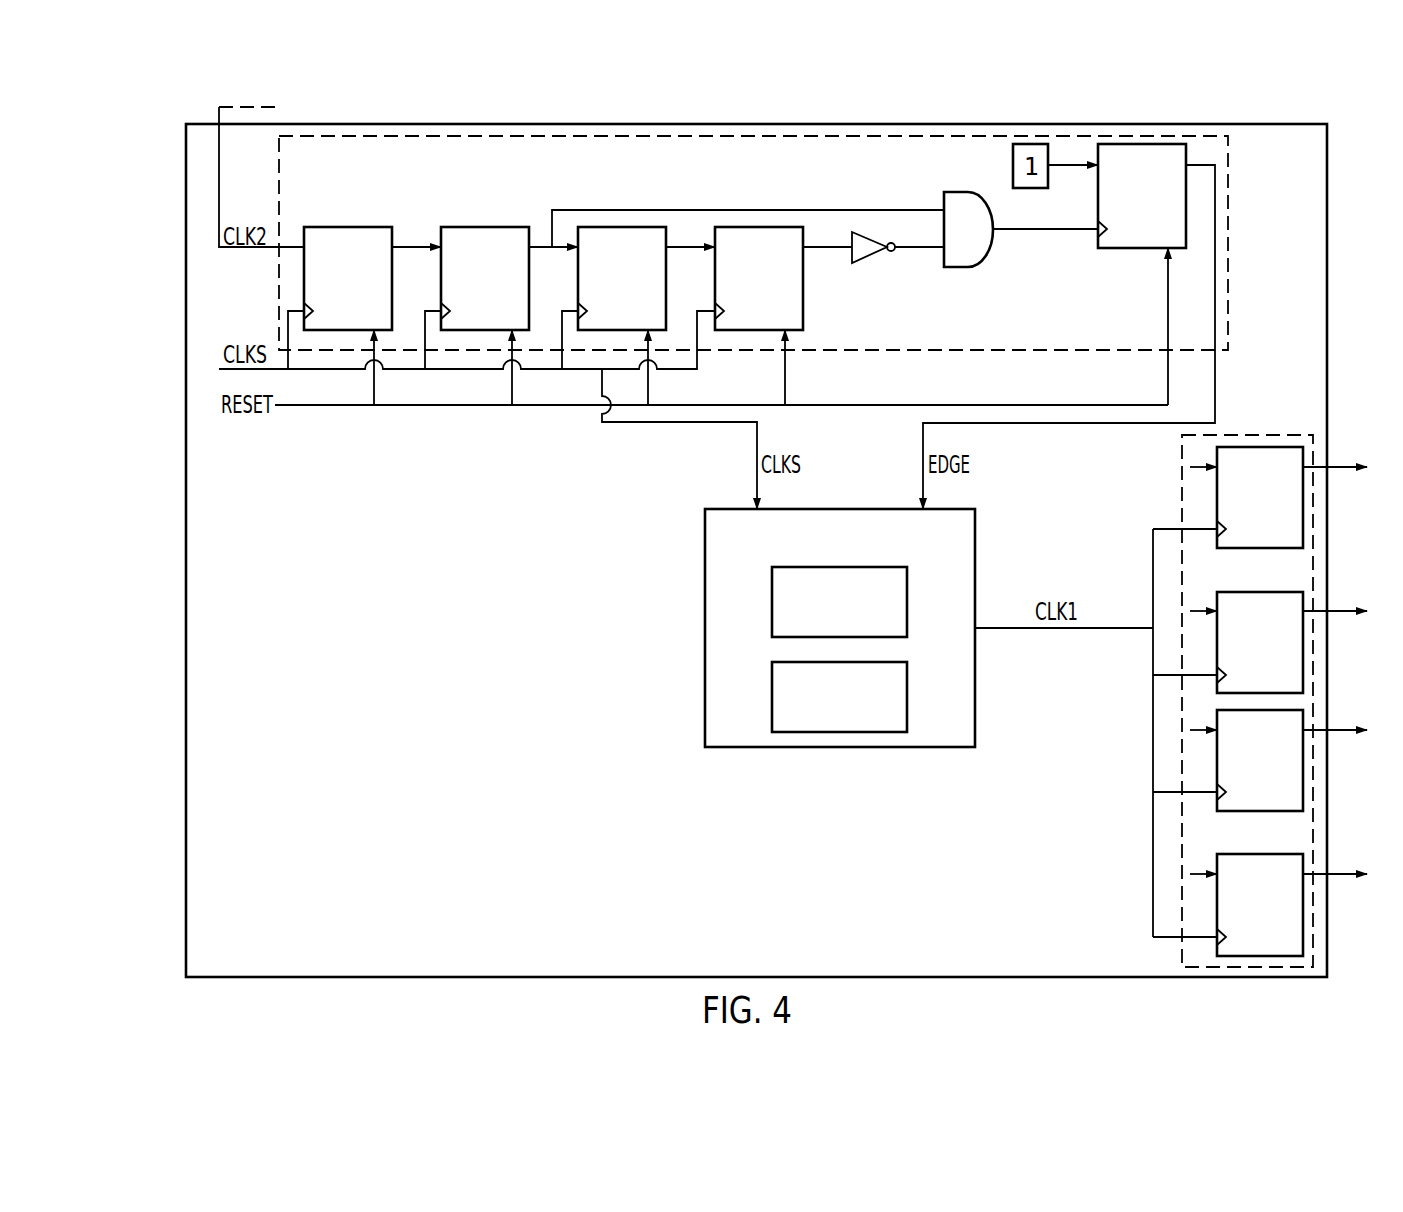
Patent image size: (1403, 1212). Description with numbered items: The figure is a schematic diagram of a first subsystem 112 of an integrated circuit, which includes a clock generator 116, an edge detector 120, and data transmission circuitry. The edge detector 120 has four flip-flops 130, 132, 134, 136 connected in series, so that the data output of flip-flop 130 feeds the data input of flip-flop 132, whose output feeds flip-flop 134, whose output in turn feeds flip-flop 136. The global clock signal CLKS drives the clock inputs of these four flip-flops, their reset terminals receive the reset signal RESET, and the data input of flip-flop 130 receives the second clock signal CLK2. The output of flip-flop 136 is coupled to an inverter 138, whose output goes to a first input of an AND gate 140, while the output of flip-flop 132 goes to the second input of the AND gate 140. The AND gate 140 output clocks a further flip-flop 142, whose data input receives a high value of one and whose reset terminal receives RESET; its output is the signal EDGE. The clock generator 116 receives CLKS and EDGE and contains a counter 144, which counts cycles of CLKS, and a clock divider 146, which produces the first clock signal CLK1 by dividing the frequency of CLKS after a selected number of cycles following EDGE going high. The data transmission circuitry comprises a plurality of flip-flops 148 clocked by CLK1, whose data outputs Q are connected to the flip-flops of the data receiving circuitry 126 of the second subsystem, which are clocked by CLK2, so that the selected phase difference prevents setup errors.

The first subsystem 112 is at (1328, 216).
The clock generator 116 is at (806, 628).
The edge detector 120 is at (1228, 252).
The data receiving circuitry 126 is at (1263, 433).
The flip-flop 130 is at (342, 226).
The flip-flop 132 is at (480, 226).
The flip-flop 134 is at (618, 226).
The flip-flop 136 is at (803, 287).
The inverter 138 is at (868, 263).
The AND gate 140 is at (988, 248).
The flip-flop 142 is at (1128, 252).
The counter 144 is at (910, 606).
The clock divider 146 is at (910, 698).
The flip-flops 148 is at (1267, 549).